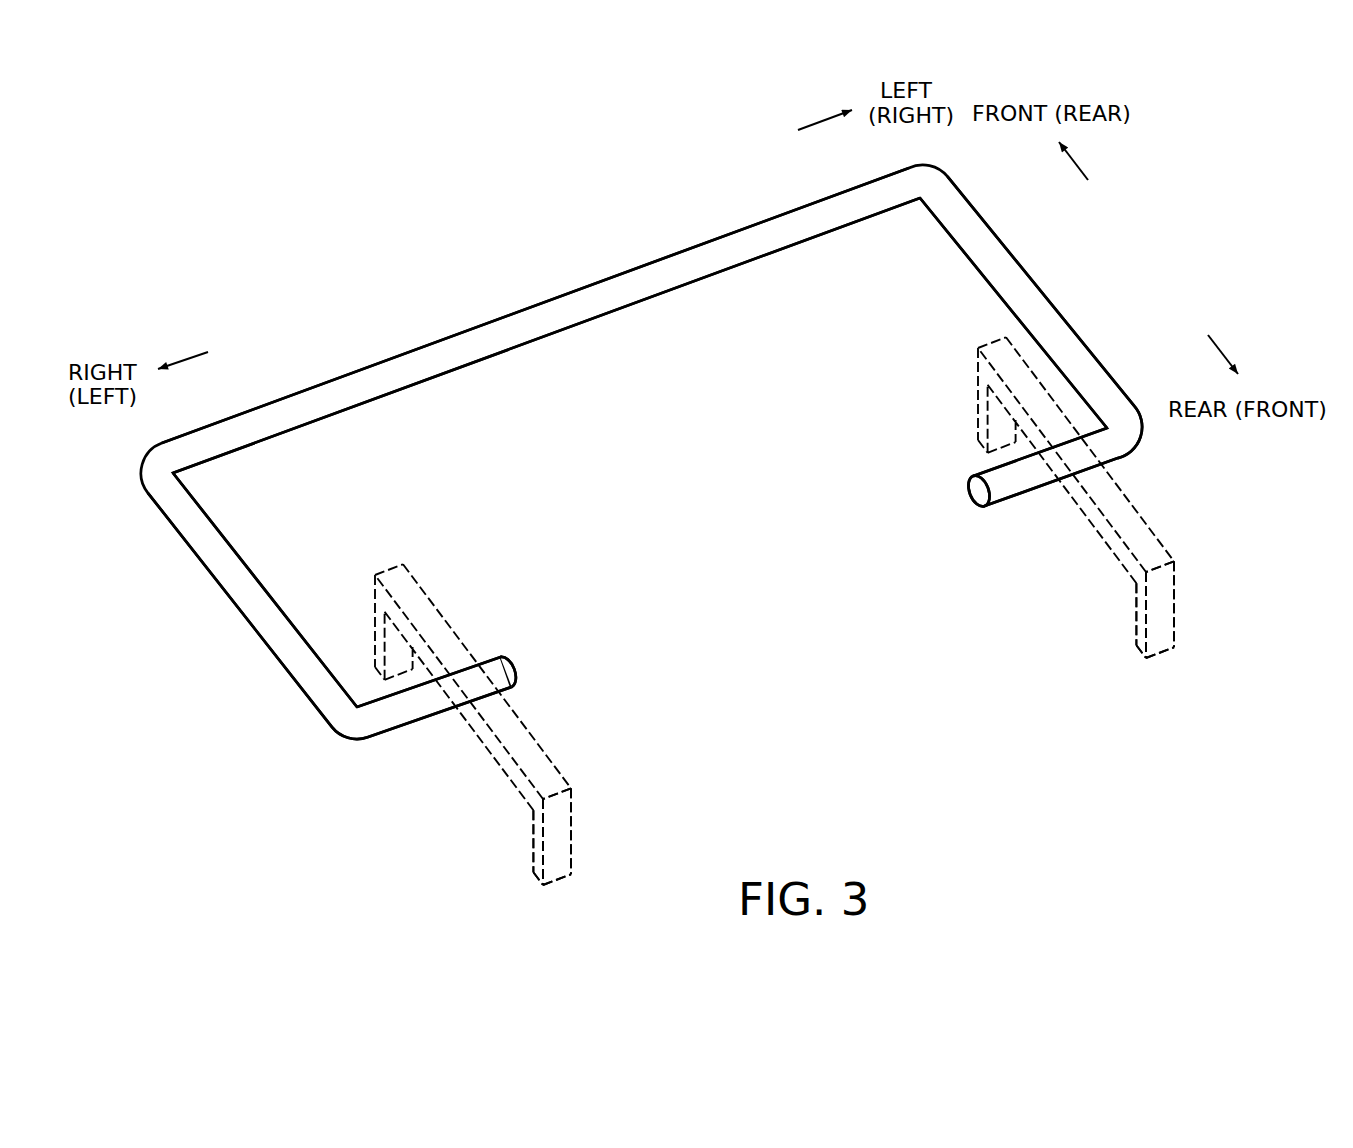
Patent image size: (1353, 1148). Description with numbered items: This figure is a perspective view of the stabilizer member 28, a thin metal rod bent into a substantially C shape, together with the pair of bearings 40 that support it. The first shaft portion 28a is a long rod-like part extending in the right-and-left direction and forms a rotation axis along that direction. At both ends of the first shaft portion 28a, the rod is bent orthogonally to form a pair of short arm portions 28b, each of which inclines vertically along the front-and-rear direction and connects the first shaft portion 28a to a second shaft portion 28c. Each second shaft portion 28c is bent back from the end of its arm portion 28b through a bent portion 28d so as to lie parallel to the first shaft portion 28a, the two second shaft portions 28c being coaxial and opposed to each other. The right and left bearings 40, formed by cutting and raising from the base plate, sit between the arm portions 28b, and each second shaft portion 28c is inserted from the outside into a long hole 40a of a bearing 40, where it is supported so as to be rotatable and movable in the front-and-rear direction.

The stabilizer member 28 is at (235, 181).
The first shaft portion 28a is at (550, 300).
The arm portion 28b is at (1017, 288).
The second shaft portion 28c is at (1017, 488).
The bent portion 28d is at (1128, 437).
The bearing 40 is at (1181, 592).
The long hole 40a is at (1125, 556).